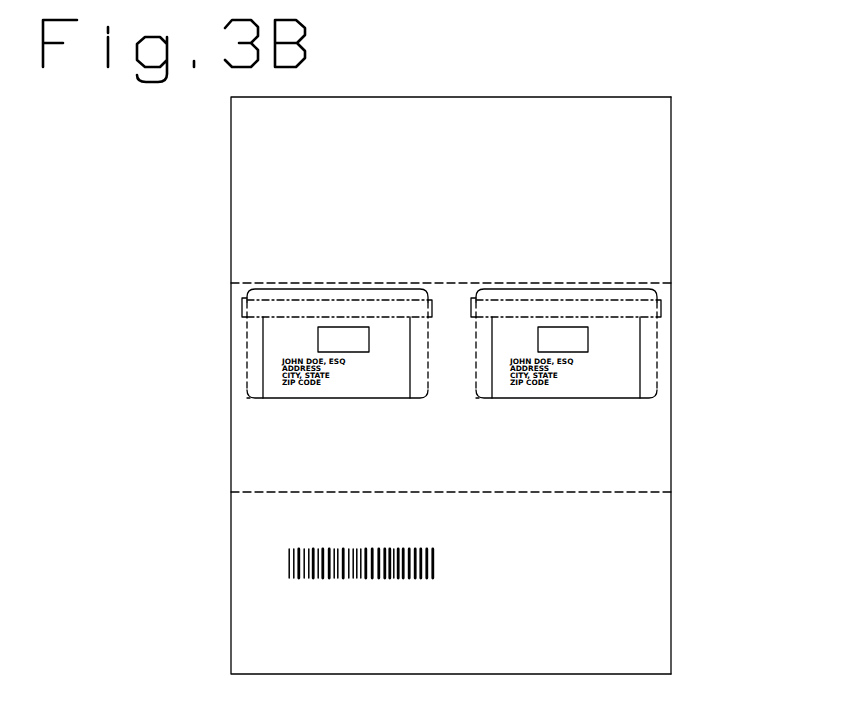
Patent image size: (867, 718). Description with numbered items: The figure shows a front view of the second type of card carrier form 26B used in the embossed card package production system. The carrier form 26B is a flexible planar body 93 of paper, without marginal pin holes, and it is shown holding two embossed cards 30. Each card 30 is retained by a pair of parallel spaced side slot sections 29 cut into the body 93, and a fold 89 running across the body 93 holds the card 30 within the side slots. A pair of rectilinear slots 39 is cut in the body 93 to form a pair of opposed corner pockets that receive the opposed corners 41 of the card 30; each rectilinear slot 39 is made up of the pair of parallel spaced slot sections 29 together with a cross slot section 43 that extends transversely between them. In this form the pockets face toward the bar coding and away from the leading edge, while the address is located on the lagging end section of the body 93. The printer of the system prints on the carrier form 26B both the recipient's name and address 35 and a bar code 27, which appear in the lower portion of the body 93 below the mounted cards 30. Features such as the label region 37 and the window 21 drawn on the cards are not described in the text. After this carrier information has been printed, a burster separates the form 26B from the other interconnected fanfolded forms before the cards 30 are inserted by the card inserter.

The flexible planar body 93 is at (427, 103).
The second type of carrier form 26B is at (678, 220).
The fold 89 is at (470, 282).
The card 30 is at (336, 298).
The cross slot section 43 is at (256, 323).
The rectilinear slots 39 is at (263, 339).
The label bottom portion 37 is at (315, 401).
The side slot sections 29 is at (264, 350).
The opposed corners 41 is at (250, 401).
The window 21 is at (326, 345).
The bar code 27 is at (287, 560).
The name and address 35 is at (298, 615).